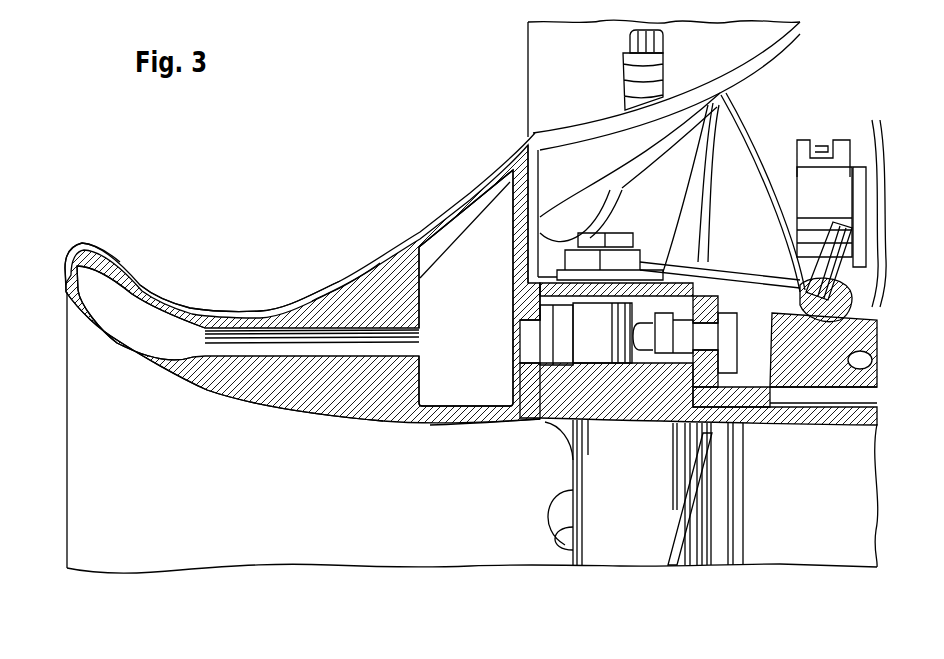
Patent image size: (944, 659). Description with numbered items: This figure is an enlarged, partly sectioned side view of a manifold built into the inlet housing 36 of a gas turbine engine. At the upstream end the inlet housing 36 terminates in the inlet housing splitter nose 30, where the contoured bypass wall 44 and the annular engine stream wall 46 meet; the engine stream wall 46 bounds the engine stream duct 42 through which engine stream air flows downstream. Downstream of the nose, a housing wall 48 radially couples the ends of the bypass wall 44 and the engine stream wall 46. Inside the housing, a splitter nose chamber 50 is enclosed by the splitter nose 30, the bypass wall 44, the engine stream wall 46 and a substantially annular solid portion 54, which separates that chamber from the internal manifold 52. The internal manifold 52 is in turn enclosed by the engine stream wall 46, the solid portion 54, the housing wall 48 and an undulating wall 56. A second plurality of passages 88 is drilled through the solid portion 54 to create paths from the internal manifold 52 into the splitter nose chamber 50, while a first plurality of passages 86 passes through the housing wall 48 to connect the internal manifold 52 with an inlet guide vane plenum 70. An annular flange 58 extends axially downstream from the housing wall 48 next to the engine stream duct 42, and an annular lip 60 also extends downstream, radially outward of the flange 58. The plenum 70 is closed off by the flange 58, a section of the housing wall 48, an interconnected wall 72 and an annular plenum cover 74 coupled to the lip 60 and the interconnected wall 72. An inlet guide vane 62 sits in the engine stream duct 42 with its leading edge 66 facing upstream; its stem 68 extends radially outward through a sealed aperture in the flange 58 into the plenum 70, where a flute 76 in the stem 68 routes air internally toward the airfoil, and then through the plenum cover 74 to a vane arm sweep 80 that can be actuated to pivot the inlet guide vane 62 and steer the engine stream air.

The inlet housing splitter nose 30 is at (82, 245).
The inlet housing 36 is at (261, 307).
The engine stream duct 42 is at (472, 432).
The contoured bypass wall 44 is at (302, 278).
The annular engine stream wall 46 is at (253, 403).
The housing wall 48 is at (510, 215).
The splitter nose chamber 50 is at (132, 307).
The internal manifold 52 is at (447, 267).
The solid portion 54 is at (347, 297).
The undulating wall 56 is at (470, 203).
The annular flange 58 is at (566, 385).
The annular lip 60 is at (486, 385).
The inlet guide vane 62 is at (637, 533).
The leading edge 66 is at (565, 500).
The stem 68 is at (630, 375).
The inlet guide vane plenum 70 is at (557, 333).
The interconnected wall 72 is at (653, 283).
The annular plenum cover 74 is at (645, 283).
The flute 76 is at (582, 343).
The vane arm sweep 80 is at (725, 305).
The first plurality of passages 86 is at (517, 320).
The second plurality of passages 88 is at (220, 350).